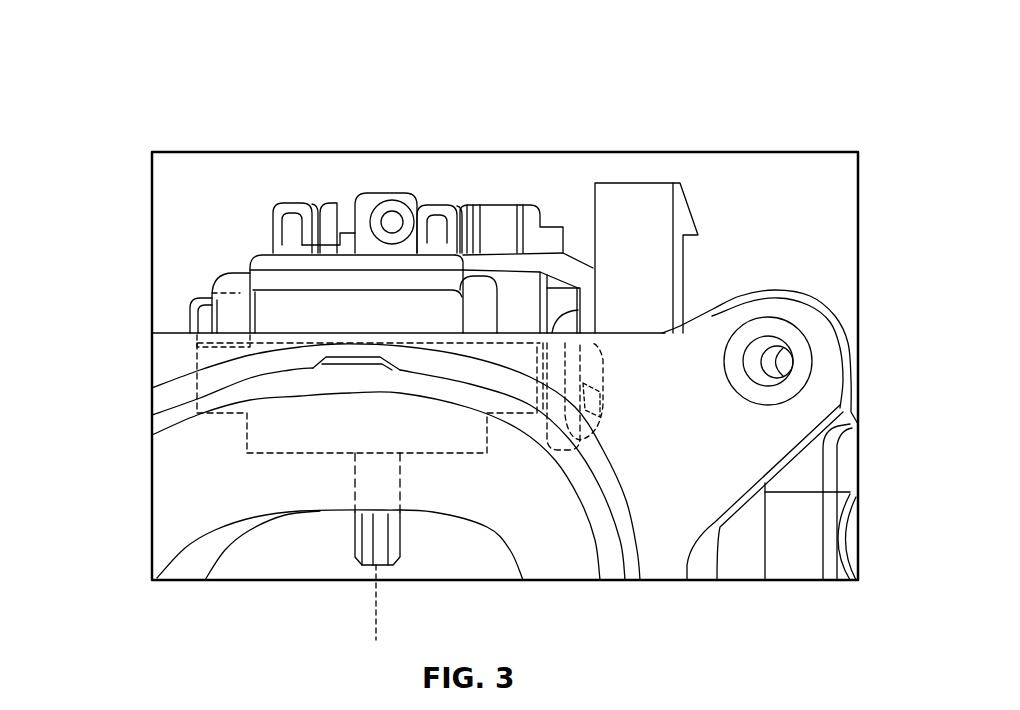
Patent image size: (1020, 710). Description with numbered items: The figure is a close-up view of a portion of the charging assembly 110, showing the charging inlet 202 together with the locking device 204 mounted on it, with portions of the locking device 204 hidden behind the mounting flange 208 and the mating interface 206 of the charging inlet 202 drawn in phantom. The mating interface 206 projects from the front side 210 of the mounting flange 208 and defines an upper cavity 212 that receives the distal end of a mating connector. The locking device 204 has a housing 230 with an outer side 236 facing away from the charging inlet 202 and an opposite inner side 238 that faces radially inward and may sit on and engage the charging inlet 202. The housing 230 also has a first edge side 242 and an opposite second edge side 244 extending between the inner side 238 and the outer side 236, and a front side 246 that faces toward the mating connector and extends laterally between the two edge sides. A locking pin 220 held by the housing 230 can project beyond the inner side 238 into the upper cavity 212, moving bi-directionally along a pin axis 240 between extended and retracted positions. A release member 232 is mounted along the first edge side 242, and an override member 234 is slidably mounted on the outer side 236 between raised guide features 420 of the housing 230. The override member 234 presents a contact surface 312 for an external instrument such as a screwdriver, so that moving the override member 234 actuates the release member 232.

The charging assembly 110 is at (198, 85).
The charging inlet 202 is at (173, 393).
The locking device 204 is at (260, 262).
The mating interface 206 is at (537, 530).
The mounting flange 208 is at (680, 470).
The front side 210 is at (685, 400).
The upper cavity 212 is at (295, 520).
The locking pin 220 is at (367, 540).
The housing 230 is at (232, 290).
The release member 232 is at (563, 298).
The override member 234 is at (403, 193).
The outer side 236 is at (353, 262).
The inner side 238 is at (430, 456).
The pin axis 240 is at (380, 600).
The first edge side 242 is at (580, 327).
The second edge side 244 is at (190, 327).
The front side 246 is at (283, 325).
The contact surface 312 is at (388, 220).
The guide features 420 is at (443, 210).